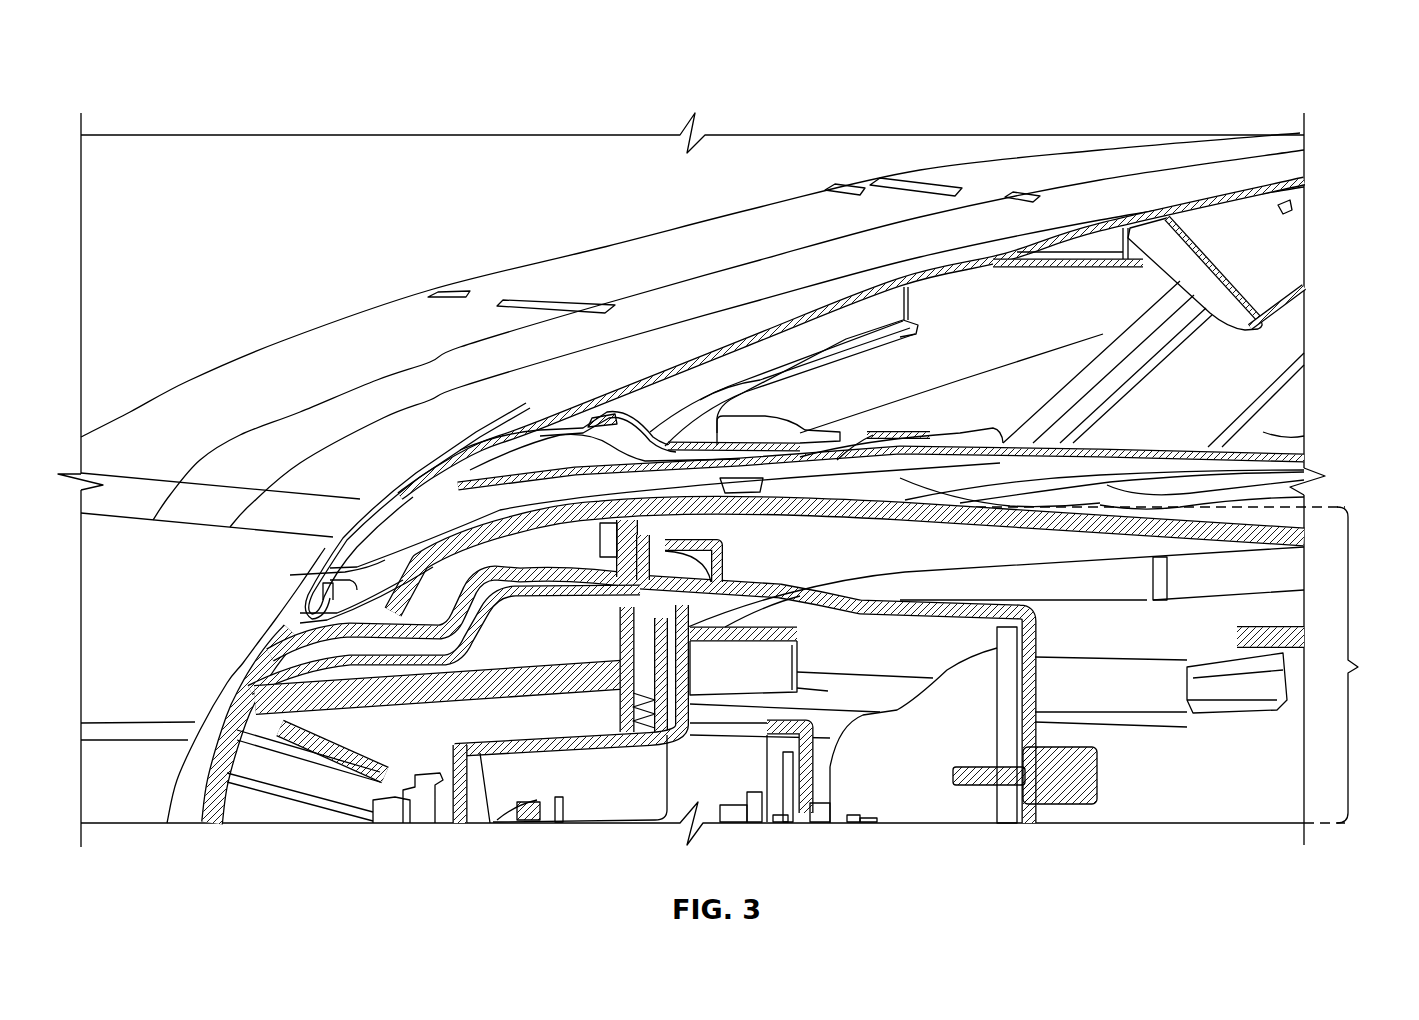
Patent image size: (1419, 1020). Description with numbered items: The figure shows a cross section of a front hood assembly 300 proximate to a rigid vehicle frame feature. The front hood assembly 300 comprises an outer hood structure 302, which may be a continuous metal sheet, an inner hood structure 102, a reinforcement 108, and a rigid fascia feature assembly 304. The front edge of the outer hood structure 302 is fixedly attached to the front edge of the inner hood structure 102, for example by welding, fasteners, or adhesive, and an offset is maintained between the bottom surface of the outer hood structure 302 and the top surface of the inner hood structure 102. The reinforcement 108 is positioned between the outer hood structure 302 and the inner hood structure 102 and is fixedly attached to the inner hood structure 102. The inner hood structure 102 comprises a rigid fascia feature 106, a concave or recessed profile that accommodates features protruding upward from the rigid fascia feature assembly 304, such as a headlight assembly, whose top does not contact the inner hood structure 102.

The front hood assembly 300 is at (158, 64).
The outer hood structure 302 is at (574, 273).
The inner hood structure 102 is at (411, 492).
The reinforcement 108 is at (598, 410).
The rigid fascia feature 106 is at (279, 622).
The rigid fascia feature assembly 304 is at (1187, 665).